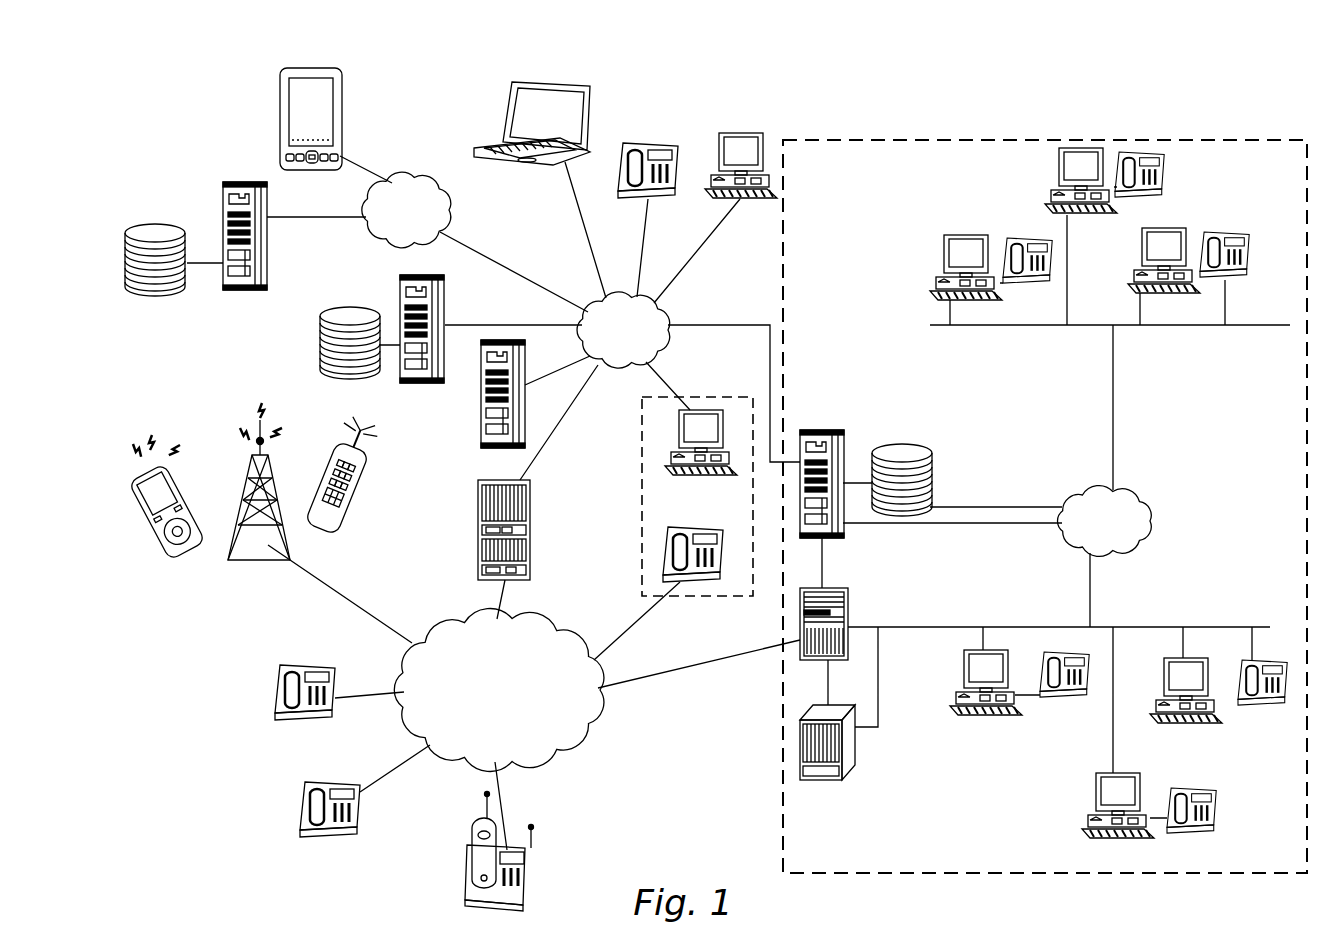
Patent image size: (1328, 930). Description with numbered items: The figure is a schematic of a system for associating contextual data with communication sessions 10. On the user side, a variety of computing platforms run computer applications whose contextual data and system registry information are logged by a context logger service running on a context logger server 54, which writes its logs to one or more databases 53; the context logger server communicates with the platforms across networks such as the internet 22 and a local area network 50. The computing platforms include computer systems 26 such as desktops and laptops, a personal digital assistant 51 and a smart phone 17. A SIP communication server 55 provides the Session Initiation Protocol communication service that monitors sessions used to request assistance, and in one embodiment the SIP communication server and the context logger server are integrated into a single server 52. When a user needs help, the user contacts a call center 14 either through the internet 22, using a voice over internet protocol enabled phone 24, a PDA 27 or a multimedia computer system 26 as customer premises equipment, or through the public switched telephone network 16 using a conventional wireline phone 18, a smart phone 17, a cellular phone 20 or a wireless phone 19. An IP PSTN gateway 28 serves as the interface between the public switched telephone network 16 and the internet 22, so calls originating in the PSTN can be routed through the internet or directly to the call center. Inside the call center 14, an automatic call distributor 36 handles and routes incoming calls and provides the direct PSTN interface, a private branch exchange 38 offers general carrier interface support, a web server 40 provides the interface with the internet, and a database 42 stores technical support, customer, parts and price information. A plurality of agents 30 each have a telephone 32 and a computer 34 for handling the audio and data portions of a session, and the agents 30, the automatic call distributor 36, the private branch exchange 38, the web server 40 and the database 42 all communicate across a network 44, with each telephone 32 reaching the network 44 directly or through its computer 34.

The system for associating contextual data with communication sessions 10 is at (170, 150).
The call center 14 is at (810, 140).
The public switched telephone network 16 is at (598, 708).
The smart phone 17 is at (162, 538).
The conventional wireline phone 18 is at (666, 550).
The wireless phone 19 is at (528, 873).
The cellular phone 20 is at (352, 534).
The internet 22 is at (664, 303).
The voice over internet protocol enabled phone 24 is at (632, 144).
The computer system 26 is at (492, 156).
The PDA 27 is at (642, 490).
The IP PSTN gateway 28 is at (478, 548).
The agent 30 is at (1060, 172).
The telephone 32 is at (1130, 155).
The computer 34 is at (1080, 148).
The automatic call distributor 36 is at (850, 605).
The private branch exchange 38 is at (816, 781).
The web server 40 is at (843, 437).
The database 42 is at (930, 460).
The network 44 is at (1150, 514).
The local area network 50 is at (400, 180).
The personal digital assistant 51 is at (280, 102).
The single server 52 is at (246, 292).
The database 53 is at (155, 298).
The context logger server 54 is at (400, 295).
The SIP communication server 55 is at (481, 408).